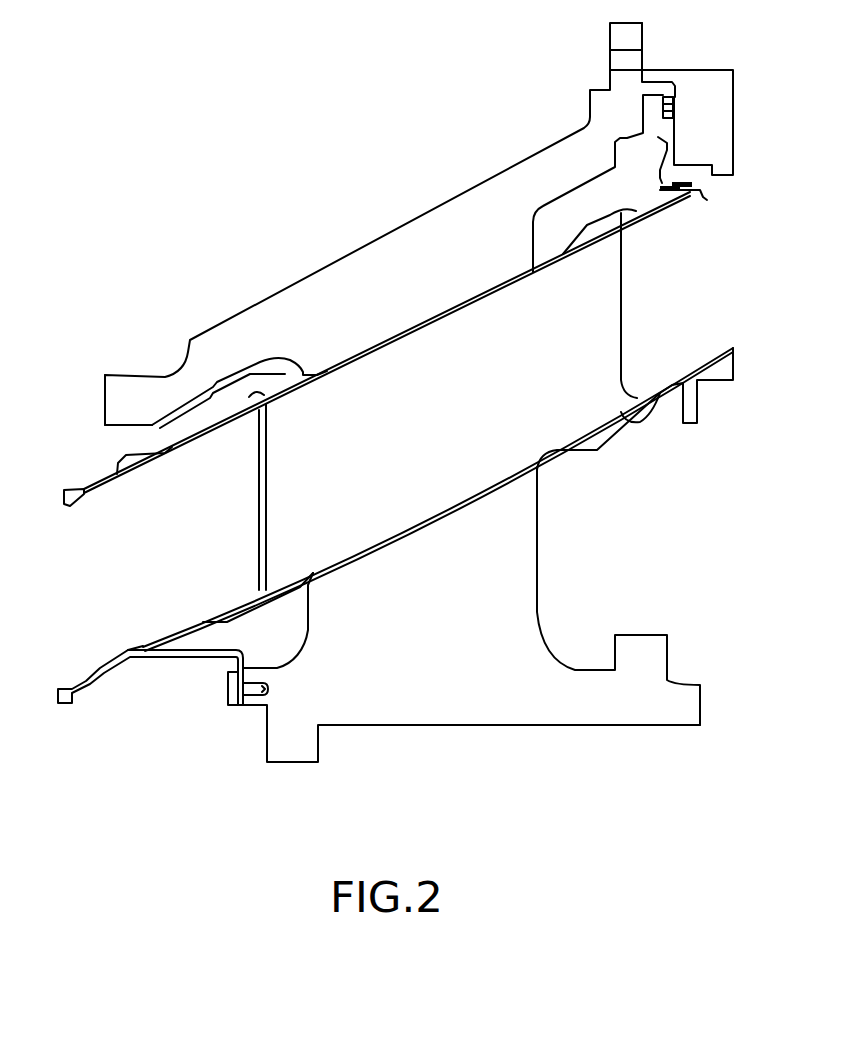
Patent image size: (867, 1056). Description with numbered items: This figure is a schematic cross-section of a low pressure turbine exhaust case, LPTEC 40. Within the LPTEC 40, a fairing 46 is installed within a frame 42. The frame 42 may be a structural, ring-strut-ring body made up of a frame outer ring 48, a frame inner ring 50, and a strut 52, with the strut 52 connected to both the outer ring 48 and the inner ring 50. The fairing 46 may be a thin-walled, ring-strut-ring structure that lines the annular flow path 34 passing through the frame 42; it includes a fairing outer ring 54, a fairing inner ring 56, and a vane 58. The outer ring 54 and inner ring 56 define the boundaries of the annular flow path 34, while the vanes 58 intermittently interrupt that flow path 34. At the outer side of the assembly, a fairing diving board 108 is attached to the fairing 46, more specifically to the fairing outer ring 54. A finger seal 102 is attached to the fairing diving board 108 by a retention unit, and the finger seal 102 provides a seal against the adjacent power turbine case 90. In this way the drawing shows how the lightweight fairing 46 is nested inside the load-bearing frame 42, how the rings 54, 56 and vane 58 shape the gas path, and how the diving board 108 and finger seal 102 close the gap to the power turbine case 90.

The LPTEC 40 is at (248, 117).
The annular flow path 34 is at (373, 427).
The frame 42 is at (588, 610).
The fairing 46 is at (466, 272).
The frame outer ring 48 is at (173, 390).
The frame inner ring 50 is at (628, 710).
The strut 52 is at (441, 641).
The fairing outer ring 54 is at (195, 440).
The fairing inner ring 56 is at (220, 611).
The vane 58 is at (623, 327).
The power turbine case 90 is at (710, 76).
The finger seal 102 is at (678, 175).
The fairing diving board 108 is at (646, 197).